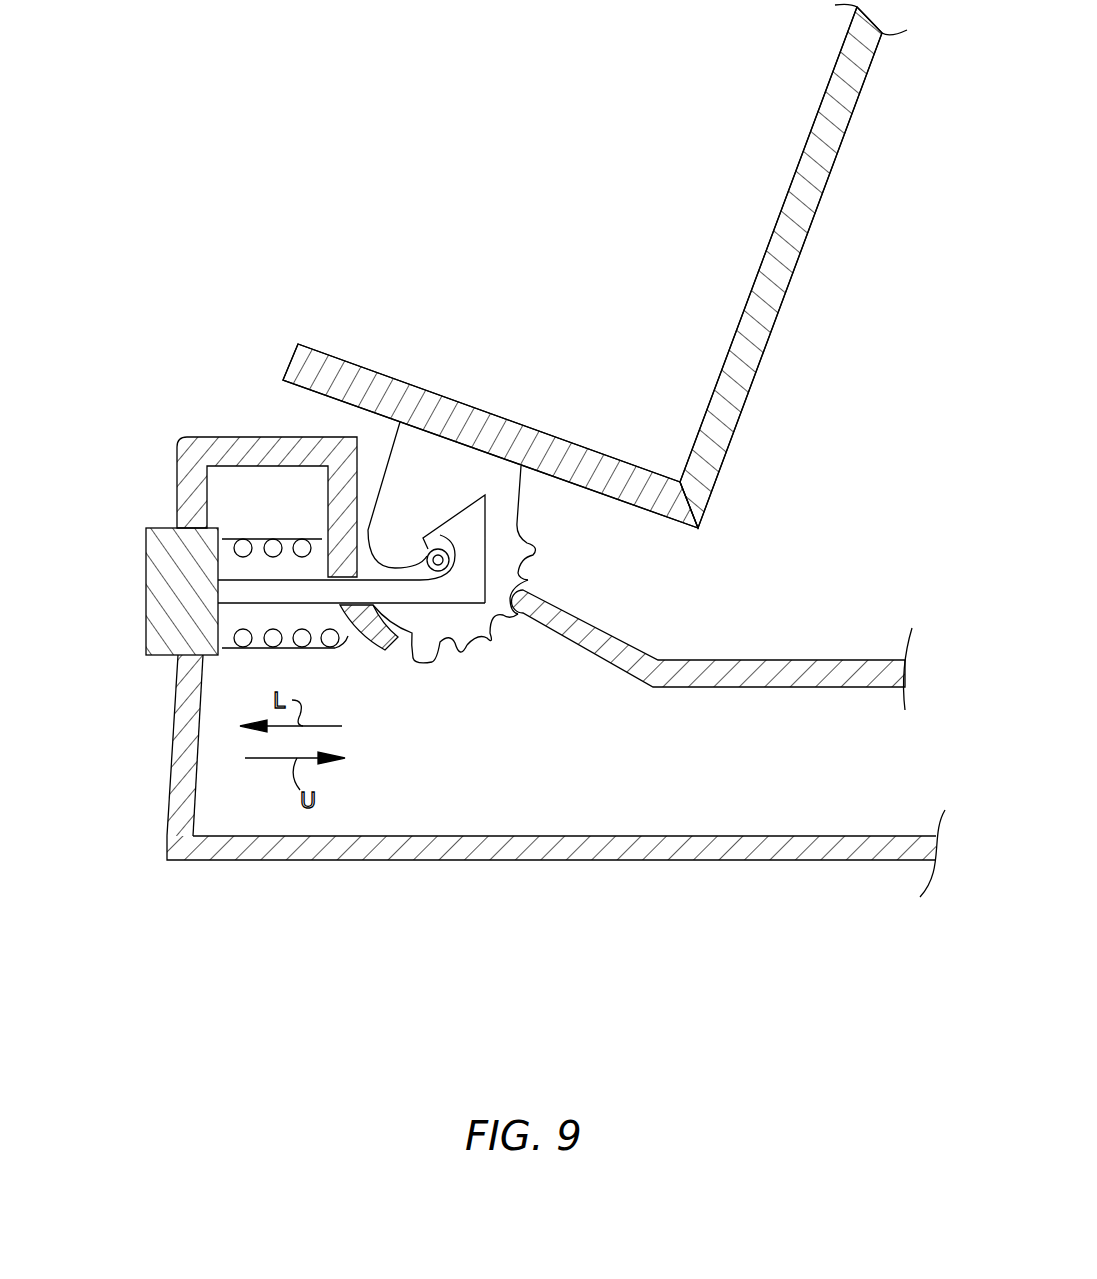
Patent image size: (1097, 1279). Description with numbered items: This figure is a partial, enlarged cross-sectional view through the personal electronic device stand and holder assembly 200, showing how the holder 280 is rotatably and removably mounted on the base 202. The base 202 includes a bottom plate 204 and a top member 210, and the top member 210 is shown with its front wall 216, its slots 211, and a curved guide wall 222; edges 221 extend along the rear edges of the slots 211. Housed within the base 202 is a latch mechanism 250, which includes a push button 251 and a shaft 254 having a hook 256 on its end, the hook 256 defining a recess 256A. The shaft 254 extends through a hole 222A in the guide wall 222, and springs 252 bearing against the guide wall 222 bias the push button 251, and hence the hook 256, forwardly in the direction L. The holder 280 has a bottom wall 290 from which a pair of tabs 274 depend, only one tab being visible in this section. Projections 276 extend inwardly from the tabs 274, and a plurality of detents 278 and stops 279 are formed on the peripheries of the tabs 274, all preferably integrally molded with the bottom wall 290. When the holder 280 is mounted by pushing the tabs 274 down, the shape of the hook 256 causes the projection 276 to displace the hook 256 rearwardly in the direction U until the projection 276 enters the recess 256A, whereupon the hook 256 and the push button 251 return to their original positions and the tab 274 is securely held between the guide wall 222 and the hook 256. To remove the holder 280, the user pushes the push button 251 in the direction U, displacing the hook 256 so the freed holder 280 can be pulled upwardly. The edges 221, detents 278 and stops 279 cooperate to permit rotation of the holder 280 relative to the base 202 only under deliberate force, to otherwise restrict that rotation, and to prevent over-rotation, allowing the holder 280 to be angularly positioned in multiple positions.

The assembly 200 is at (364, 180).
The base 202 is at (795, 930).
The bottom plate 204 is at (682, 860).
The top member 210 is at (835, 670).
The slots 211 is at (570, 552).
The front wall 216 is at (183, 797).
The edges 221 is at (537, 598).
The guide wall 222 is at (346, 466).
The hole 222A is at (342, 572).
The latch mechanism 250 is at (387, 686).
The push button 251 is at (170, 610).
The springs 252 is at (255, 538).
The shaft 254 is at (245, 593).
The hook 256 is at (458, 527).
The recess 256A is at (428, 549).
The tabs 274 is at (503, 460).
The projections 276 is at (525, 467).
The detents 278 is at (492, 642).
The stops 279 is at (437, 661).
The holder 280 is at (798, 212).
The bottom wall 290 is at (388, 398).